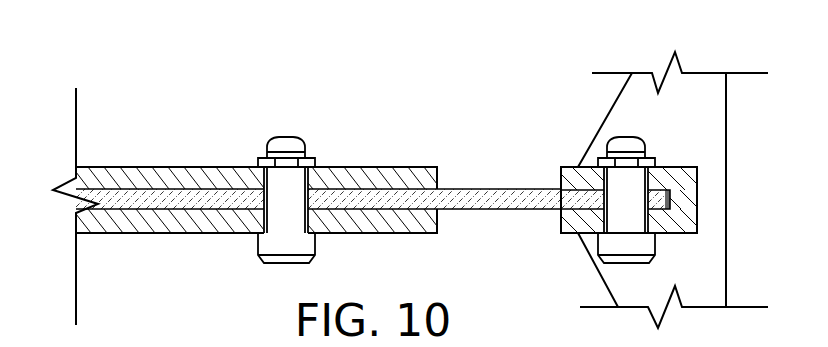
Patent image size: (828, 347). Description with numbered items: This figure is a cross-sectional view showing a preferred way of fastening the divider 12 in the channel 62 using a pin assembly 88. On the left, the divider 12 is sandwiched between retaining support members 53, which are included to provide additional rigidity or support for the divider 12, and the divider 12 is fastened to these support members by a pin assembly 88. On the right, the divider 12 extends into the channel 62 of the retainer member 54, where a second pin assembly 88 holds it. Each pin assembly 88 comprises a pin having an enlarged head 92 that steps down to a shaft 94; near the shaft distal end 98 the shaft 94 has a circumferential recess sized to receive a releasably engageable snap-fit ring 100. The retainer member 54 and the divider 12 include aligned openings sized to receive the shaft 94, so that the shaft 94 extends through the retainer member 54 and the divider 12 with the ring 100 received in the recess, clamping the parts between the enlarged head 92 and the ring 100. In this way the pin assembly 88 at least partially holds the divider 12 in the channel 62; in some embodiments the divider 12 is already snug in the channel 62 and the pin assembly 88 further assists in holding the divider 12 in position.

The divider 12 is at (491, 186).
The retaining support member 53 is at (182, 165).
The retainer member 54 is at (698, 167).
The channel 62 is at (558, 210).
The pin assembly 88 is at (445, 163).
The enlarged head 92 is at (270, 245).
The shaft 94 is at (290, 188).
The shaft distal end 98 is at (285, 136).
The snap-fit ring 100 is at (316, 163).